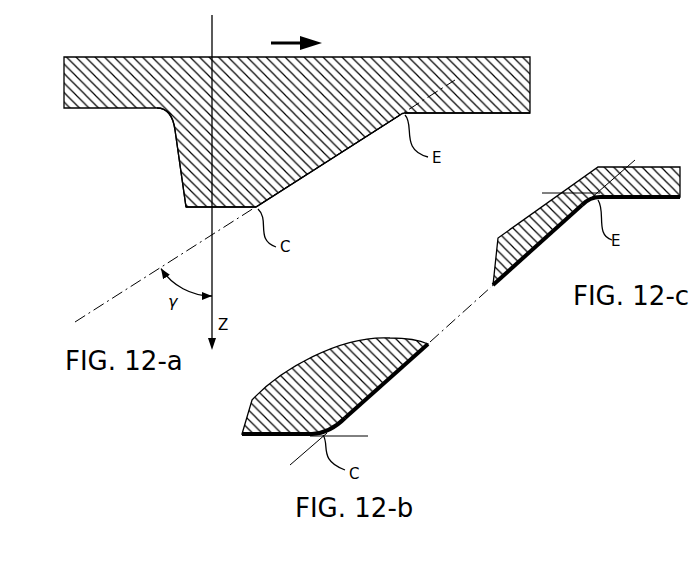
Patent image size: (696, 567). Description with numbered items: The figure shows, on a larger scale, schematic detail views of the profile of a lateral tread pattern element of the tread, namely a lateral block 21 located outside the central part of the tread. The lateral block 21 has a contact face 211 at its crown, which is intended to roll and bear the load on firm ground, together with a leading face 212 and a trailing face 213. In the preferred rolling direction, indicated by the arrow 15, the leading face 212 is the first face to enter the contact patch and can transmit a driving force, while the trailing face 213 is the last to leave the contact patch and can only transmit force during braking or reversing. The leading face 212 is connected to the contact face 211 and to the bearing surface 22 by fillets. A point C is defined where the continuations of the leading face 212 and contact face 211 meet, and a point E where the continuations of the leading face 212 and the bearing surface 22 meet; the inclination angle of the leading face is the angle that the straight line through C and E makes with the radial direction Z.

In FIG. 12A, the cutting direction 15 is at (281, 43).
In FIG. 12A, the lateral block 21 is at (543, 213).
In FIG. 12B, the lateral block 21 is at (335, 386).
In FIG. 12C, the lateral block 21 is at (586, 226).
In FIG. 12A, the contact face 211 is at (202, 210).
In FIG. 12B, the contact face 211 is at (270, 435).
In FIG. 12A, the leading face 212 is at (335, 158).
In FIG. 12B, the leading face 212 is at (403, 368).
In FIG. 12C, the leading face 212 is at (538, 247).
In FIG. 12A, the trailing face 213 is at (178, 155).
In FIG. 12A, the bearing surface 22 is at (497, 114).
In FIG. 12C, the bearing surface 22 is at (673, 198).